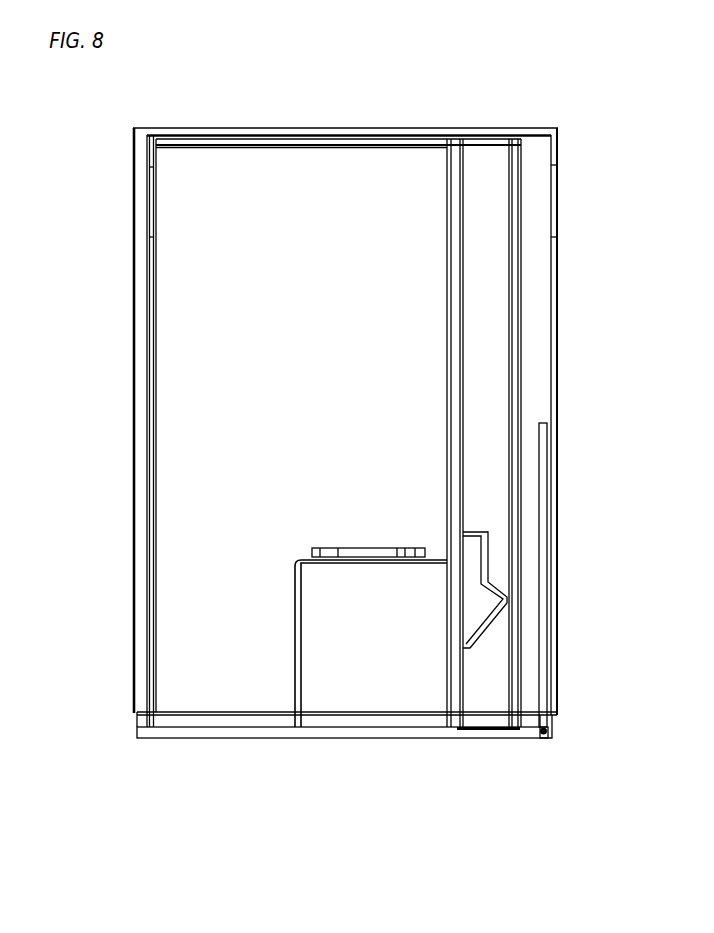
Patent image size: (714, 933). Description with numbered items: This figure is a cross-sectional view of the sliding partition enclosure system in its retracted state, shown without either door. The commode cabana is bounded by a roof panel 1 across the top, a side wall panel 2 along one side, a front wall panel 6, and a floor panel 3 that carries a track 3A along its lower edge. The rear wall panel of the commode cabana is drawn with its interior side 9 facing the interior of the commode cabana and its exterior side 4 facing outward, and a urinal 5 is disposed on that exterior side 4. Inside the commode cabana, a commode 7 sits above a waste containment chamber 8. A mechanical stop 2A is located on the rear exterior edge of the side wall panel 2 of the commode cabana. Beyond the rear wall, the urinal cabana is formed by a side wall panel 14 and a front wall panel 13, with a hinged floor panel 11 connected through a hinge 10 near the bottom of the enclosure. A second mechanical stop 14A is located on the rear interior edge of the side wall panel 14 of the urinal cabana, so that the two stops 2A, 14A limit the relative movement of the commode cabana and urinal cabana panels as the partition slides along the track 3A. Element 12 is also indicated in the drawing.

The roof panel of the commode cabana 1 is at (357, 149).
The side wall panel of the commode cabana 2 is at (301, 430).
The mechanical stop 2A is at (515, 717).
The floor panel of the commode cabana 3 is at (267, 737).
The track 3A is at (145, 718).
The exterior side of rear wall panel of the commode cabana 4 is at (499, 433).
The urinal 5 is at (497, 597).
The front wall panel of the commode cabana 6 is at (147, 262).
The commode 7 is at (388, 550).
The waste containment chamber 8 is at (371, 643).
The interior side of rear wall panel of the commode cabana 9 is at (447, 338).
The hinge 10 is at (551, 722).
The hinged floor panel of the urinal cabana 11 is at (553, 468).
The top frame 12 is at (278, 128).
The front wall panel of the urinal cabana 13 is at (557, 278).
The side wall panel of the urinal cabana 14 is at (536, 424).
The mechanical stop 14A is at (133, 380).